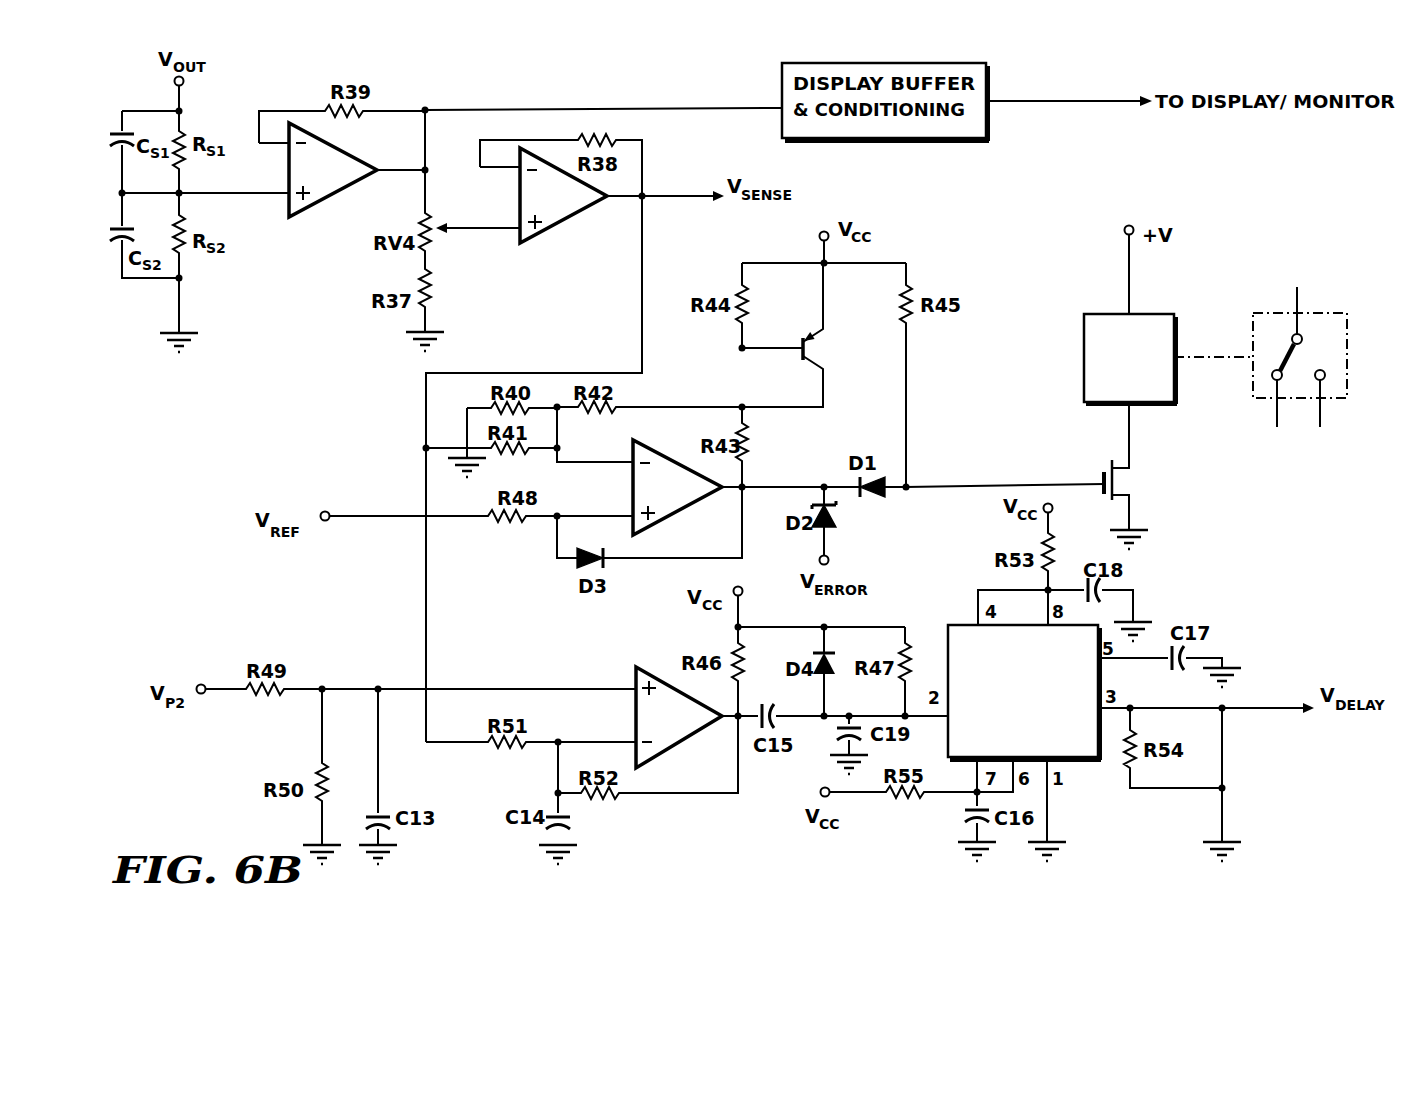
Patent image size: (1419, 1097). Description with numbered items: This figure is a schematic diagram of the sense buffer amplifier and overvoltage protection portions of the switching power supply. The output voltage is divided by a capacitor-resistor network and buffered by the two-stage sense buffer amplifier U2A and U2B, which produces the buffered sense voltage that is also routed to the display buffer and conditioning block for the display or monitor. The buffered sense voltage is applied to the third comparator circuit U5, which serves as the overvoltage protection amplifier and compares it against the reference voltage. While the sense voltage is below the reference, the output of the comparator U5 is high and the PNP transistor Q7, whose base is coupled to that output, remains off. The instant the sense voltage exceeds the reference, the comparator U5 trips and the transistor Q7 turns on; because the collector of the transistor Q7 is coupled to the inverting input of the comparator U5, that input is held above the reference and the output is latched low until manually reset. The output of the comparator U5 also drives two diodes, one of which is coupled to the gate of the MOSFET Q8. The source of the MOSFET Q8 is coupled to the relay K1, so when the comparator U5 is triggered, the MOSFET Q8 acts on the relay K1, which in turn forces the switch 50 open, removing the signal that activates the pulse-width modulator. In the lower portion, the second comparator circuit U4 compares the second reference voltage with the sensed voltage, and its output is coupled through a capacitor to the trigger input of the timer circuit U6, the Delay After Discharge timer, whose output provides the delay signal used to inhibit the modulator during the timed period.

The switch 50 is at (1346, 324).
The sense buffer amplifier U2A is at (333, 170).
The sense buffer amplifier U2B is at (563, 195).
The second comparator circuit U4 is at (679, 717).
The third comparator circuit U5 is at (677, 487).
The timer circuit U6 is at (1024, 692).
The relay K1 is at (1130, 315).
The transistor Q7 is at (799, 335).
The MOSFET Q8 is at (1134, 475).